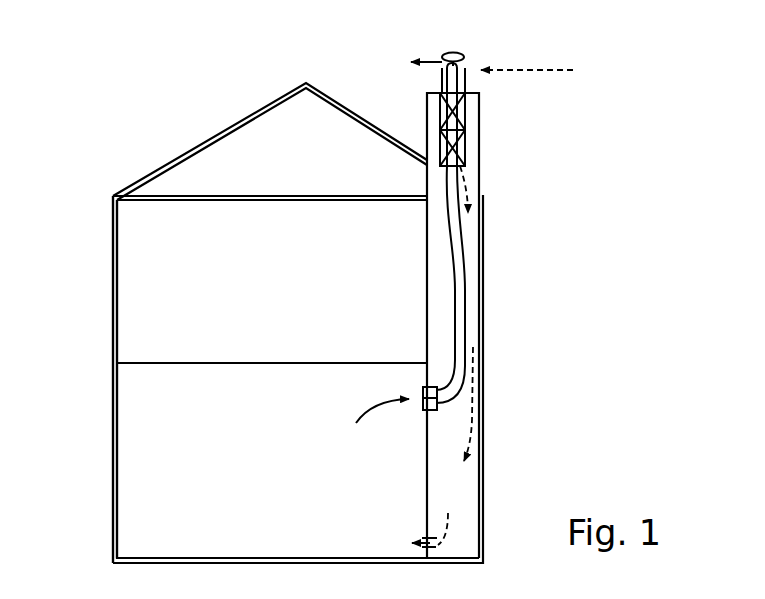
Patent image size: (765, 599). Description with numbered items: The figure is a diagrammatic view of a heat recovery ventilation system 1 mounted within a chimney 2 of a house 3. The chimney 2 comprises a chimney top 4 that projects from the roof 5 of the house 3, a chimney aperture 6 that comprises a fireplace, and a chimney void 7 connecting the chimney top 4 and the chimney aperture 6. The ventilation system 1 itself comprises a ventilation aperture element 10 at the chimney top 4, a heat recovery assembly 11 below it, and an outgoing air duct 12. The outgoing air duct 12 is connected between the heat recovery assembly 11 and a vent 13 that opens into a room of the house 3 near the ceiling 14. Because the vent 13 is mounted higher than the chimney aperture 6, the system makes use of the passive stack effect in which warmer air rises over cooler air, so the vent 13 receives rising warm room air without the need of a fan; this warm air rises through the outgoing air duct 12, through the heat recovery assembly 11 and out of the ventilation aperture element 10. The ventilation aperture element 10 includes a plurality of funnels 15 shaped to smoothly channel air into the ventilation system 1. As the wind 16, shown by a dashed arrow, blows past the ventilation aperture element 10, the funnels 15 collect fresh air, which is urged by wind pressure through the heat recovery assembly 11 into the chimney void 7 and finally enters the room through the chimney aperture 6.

The heat recovery ventilation system 1 is at (604, 226).
The chimney 2 is at (485, 303).
The house 3 is at (112, 280).
The chimney top 4 is at (430, 120).
The roof 5 is at (258, 110).
The chimney aperture 6 is at (424, 537).
The chimney void 7 is at (443, 296).
The ventilation aperture element 10 is at (452, 53).
The heat recovery assembly 11 is at (469, 143).
The outgoing air duct 12 is at (463, 332).
The vent 13 is at (425, 390).
The ceiling 14 is at (205, 364).
The funnels 15 is at (468, 70).
The wind 16 is at (562, 72).